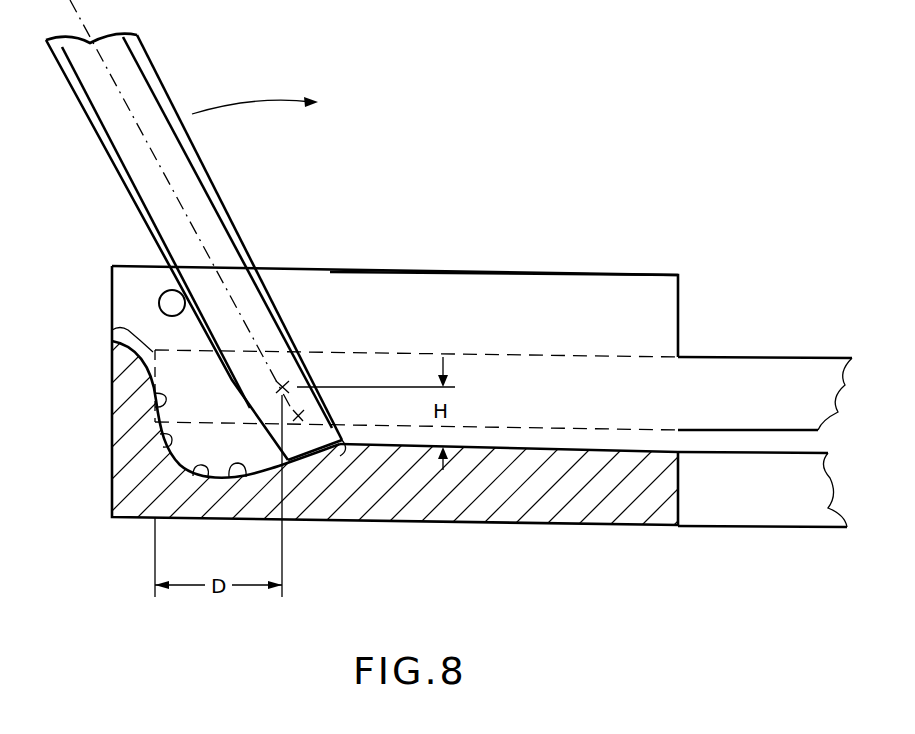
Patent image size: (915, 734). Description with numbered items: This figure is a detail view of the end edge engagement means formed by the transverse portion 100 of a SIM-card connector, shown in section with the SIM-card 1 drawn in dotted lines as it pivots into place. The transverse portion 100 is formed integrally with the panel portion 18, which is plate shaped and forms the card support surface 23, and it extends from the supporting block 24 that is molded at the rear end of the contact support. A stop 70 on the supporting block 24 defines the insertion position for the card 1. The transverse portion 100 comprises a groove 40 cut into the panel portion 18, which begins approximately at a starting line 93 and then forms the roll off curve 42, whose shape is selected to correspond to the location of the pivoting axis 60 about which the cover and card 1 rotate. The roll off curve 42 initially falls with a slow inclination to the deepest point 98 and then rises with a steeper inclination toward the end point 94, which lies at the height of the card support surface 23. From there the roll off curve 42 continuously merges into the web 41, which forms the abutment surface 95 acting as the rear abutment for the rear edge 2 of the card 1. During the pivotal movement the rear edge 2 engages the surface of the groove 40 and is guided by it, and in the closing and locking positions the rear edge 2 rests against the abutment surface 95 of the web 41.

The SIM-card 1 is at (188, 177).
The rear edge 2 is at (112, 330).
The panel portion 18 is at (452, 512).
The card support surface 23 is at (522, 452).
The supporting block 24 is at (577, 291).
The groove 40 is at (215, 445).
The web 41 is at (165, 373).
The roll off curve 42 is at (239, 478).
The pivoting axis 60 is at (280, 376).
The stop 70 is at (170, 302).
The starting line 93 is at (346, 452).
The end point 94 is at (162, 441).
The abutment surface 95 is at (157, 399).
The deepest point 98 is at (203, 478).
The transverse portion 100 is at (108, 368).